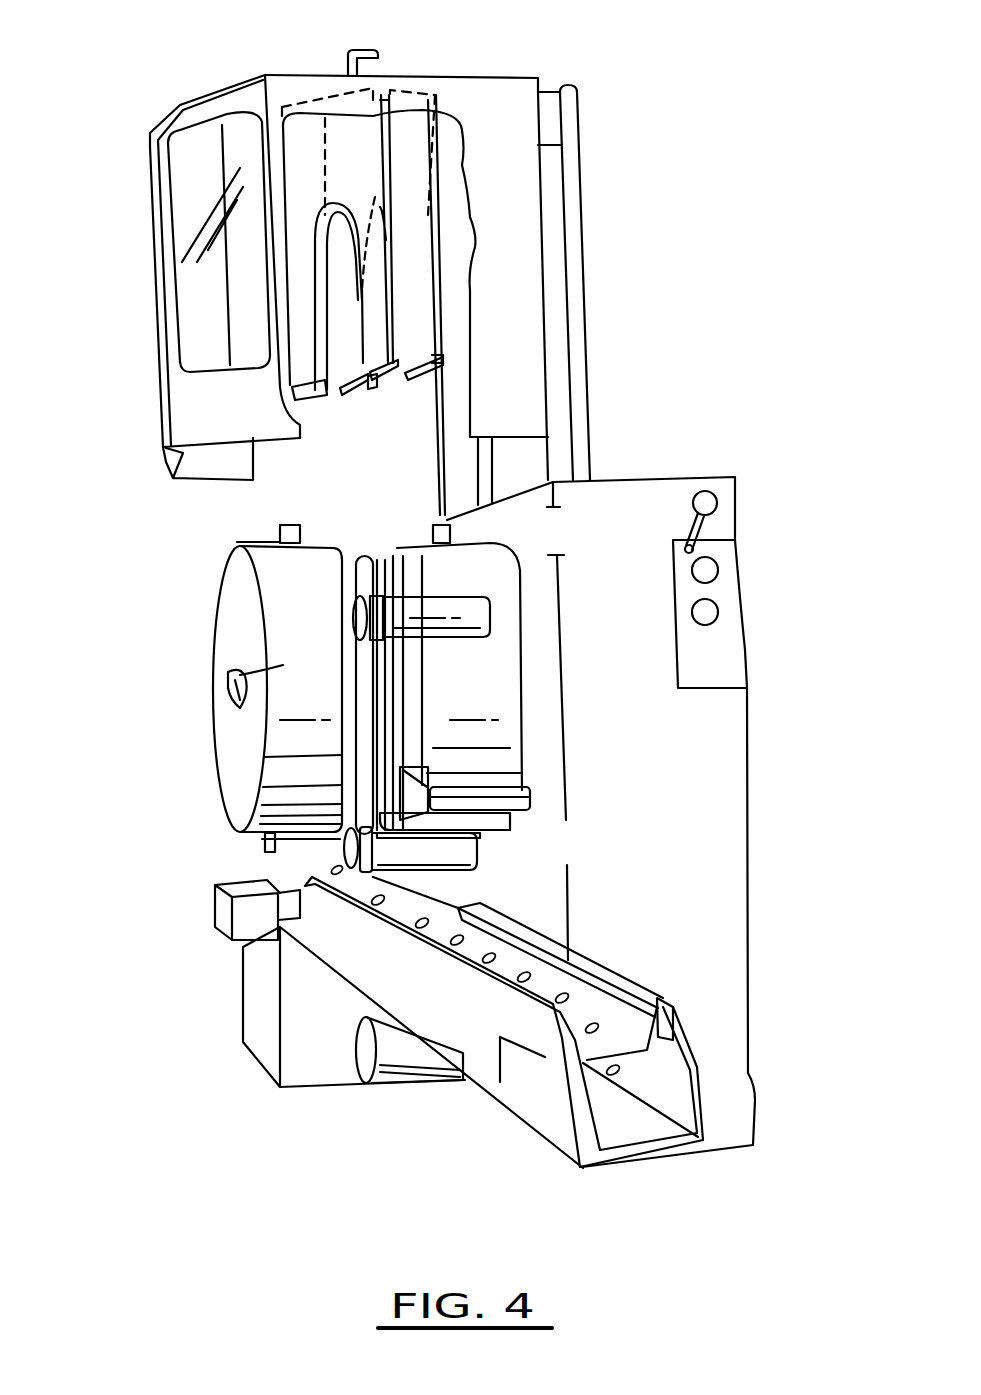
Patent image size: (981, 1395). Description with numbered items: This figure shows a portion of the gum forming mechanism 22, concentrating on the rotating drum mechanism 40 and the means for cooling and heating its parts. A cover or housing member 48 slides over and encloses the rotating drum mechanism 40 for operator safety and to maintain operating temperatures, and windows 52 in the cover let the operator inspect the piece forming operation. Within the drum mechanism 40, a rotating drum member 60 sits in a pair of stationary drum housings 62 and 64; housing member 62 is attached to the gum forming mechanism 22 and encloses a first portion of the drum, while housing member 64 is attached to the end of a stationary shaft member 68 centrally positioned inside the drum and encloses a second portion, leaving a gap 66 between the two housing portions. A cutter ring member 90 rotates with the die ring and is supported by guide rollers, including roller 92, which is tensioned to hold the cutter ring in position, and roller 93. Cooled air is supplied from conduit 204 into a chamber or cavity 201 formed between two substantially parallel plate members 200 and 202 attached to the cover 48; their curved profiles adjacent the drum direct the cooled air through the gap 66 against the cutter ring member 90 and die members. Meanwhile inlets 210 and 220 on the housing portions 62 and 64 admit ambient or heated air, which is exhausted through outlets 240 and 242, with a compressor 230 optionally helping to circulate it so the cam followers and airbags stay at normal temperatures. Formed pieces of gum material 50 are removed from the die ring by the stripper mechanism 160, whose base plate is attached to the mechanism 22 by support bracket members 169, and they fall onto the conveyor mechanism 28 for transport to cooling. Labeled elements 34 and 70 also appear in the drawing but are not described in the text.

The gum forming mechanism 22 is at (655, 435).
The conveyor mechanism 28 is at (380, 975).
The mounting plate 34 is at (737, 727).
The rotating drum mechanism 40 is at (182, 622).
The cover or housing member 48 is at (185, 404).
The pieces of formed gum material 50 is at (593, 1026).
The windows 52 is at (178, 291).
The rotating drum member 60 is at (370, 560).
The stationary drum housing 62 is at (513, 688).
The stationary drum housing 64 is at (233, 673).
The gap 66 is at (347, 512).
The stationary shaft member 68 is at (227, 685).
The wheel 70 is at (257, 691).
The cutter ring member 90 is at (373, 687).
The guide roller 92 is at (397, 598).
The guide roller 93 is at (345, 853).
The stripper mechanism 160 is at (408, 778).
The support bracket member 169 is at (510, 797).
The plate member 200 is at (282, 390).
The chamber or cavity 201 is at (347, 392).
The plate member 202 is at (443, 359).
The conduit 204 is at (367, 43).
The inlet 210 is at (283, 524).
The inlet 220 is at (495, 505).
The compressor 230 is at (270, 532).
The outlet 240 is at (265, 853).
The outlet 242 is at (477, 848).